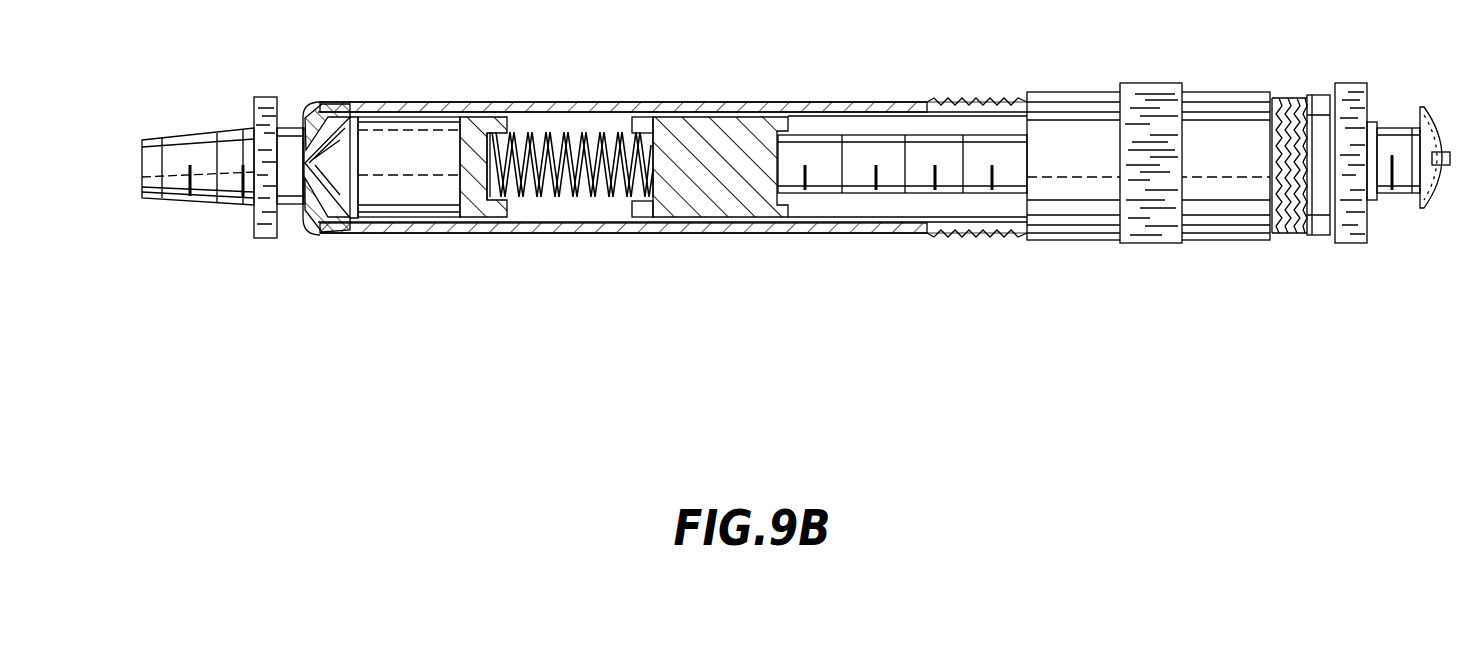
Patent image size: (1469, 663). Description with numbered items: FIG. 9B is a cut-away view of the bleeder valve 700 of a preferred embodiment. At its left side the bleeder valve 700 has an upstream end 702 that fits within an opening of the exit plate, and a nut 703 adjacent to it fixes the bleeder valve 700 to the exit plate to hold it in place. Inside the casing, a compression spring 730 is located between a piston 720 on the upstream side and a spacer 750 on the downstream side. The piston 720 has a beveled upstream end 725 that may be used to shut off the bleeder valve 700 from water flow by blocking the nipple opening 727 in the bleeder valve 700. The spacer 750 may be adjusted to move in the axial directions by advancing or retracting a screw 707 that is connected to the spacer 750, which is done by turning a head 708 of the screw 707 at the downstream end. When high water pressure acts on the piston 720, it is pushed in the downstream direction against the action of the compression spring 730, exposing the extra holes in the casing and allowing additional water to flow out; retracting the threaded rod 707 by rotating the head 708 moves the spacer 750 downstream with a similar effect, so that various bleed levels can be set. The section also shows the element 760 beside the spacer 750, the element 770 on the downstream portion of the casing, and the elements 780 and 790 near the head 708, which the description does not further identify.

The bleeder valve 700 is at (905, 306).
The upstream end 702 is at (139, 175).
The nut 703 is at (267, 100).
The screw 707 is at (918, 147).
The head 708 is at (1437, 188).
The piston 720 is at (437, 193).
The beveled upstream end 725 is at (355, 226).
The nipple opening 727 is at (330, 102).
The compression spring 730 is at (578, 130).
The spacer 750 is at (738, 193).
The spring seat 760 is at (636, 212).
The coupler 770 is at (1153, 180).
The lock nut 780 is at (1318, 103).
The threaded section 790 is at (1373, 200).